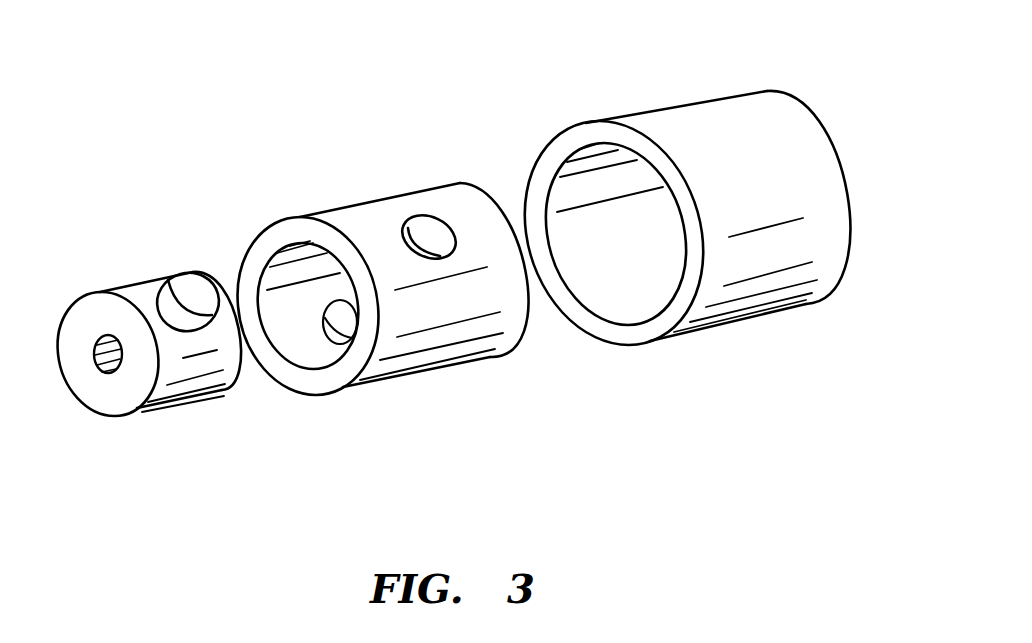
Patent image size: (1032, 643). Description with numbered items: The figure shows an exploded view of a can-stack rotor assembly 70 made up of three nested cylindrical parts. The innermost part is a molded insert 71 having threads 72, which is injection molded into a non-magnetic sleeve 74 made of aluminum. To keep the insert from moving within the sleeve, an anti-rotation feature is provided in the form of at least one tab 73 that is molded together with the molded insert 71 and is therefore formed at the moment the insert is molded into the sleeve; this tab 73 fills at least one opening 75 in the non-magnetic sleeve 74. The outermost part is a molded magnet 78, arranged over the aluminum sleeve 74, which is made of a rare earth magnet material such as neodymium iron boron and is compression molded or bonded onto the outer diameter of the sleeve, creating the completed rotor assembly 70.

The rotor assembly 70 is at (750, 342).
The molded insert 71 is at (178, 402).
The threads 72 is at (93, 349).
The tab 73 is at (197, 290).
The non-magnetic sleeve 74 is at (420, 343).
The opening 75 is at (421, 234).
The molded magnet 78 is at (671, 123).